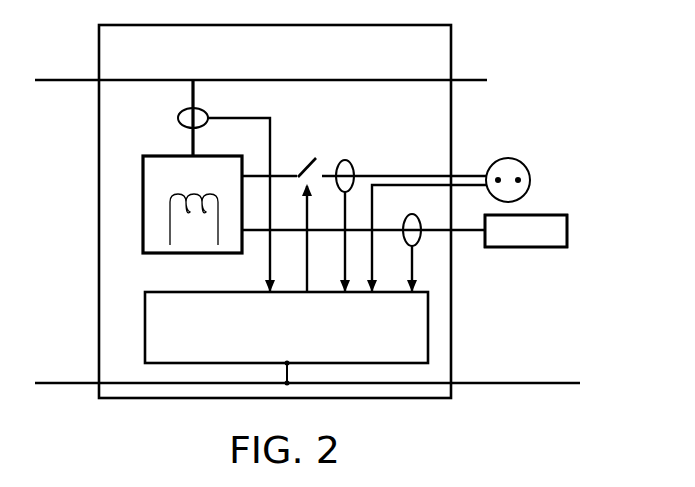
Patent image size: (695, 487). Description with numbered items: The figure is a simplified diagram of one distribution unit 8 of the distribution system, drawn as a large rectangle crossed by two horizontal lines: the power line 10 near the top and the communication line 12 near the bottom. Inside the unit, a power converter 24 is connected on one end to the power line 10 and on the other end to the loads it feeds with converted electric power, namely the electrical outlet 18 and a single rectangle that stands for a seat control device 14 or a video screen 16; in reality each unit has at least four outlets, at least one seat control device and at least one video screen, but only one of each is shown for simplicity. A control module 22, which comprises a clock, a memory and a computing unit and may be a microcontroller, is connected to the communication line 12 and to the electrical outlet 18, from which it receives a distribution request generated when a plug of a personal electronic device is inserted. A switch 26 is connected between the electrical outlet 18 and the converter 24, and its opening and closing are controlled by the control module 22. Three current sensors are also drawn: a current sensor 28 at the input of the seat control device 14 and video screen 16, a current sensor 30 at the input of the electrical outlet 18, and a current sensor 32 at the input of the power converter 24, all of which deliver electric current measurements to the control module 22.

The distribution unit 8 is at (437, 62).
The power line 10 is at (58, 78).
The communication line 12 is at (58, 380).
The seat control device 14 is at (567, 225).
The video screen 16 is at (526, 231).
The electrical outlet 18 is at (527, 166).
The control module 22 is at (301, 339).
The power converter 24 is at (206, 188).
The switch 26 is at (305, 163).
The current sensor 28 is at (418, 240).
The current sensor 30 is at (353, 163).
The current sensor 32 is at (178, 124).